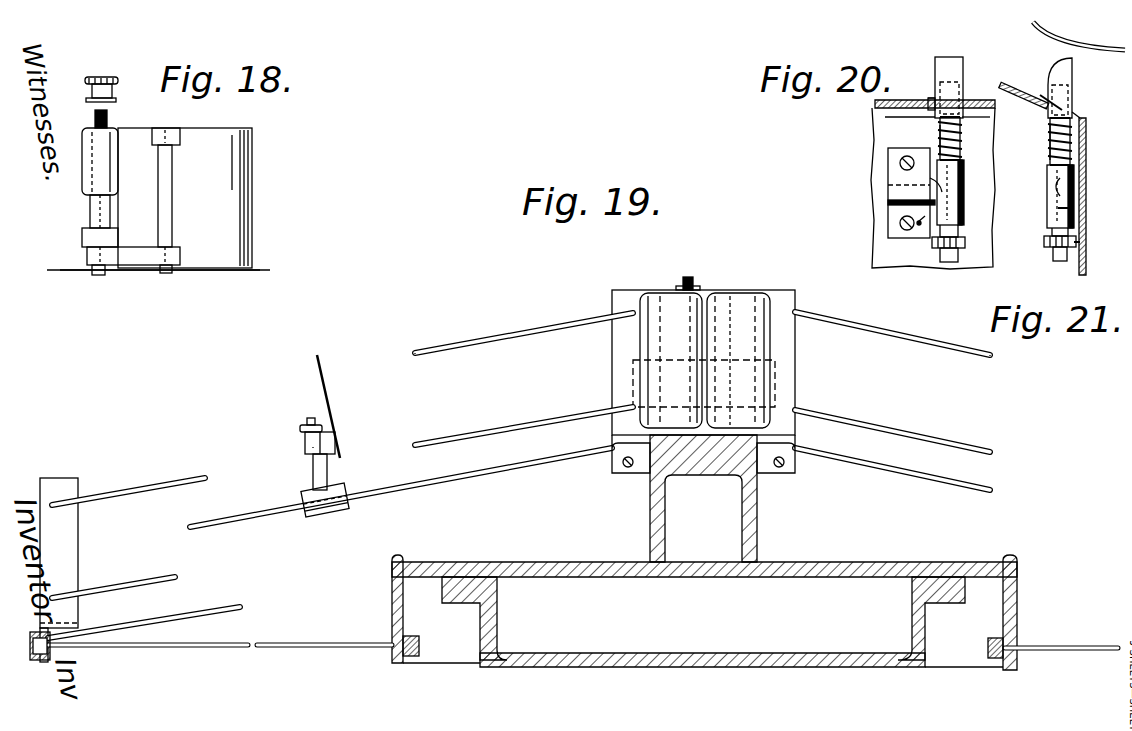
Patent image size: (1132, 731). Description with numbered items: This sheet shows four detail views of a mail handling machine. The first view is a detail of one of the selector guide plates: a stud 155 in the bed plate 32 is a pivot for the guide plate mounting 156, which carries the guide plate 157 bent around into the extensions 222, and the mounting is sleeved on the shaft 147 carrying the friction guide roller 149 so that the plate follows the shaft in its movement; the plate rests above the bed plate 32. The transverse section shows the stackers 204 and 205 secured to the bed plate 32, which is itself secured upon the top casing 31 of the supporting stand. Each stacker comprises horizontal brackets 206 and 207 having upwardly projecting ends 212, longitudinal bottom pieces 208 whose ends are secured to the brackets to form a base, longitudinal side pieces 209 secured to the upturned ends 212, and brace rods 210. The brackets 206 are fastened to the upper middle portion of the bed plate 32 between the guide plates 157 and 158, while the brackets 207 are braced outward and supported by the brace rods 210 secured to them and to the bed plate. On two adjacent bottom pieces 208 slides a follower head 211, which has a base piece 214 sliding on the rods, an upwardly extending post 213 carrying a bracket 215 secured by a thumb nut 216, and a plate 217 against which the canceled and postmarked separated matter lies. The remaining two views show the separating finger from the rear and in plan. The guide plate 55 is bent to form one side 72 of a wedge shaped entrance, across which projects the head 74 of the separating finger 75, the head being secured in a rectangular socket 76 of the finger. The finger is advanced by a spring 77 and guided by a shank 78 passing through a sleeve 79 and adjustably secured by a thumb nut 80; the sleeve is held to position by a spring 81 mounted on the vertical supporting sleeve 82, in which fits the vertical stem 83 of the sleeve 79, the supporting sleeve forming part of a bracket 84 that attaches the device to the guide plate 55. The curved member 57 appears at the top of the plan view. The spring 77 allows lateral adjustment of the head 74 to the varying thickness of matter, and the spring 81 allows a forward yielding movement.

In FIG. 18, the shaft 147 is at (108, 118).
In FIG. 19, the shaft 147 is at (688, 277).
In FIG. 18, the friction guide roller 149 is at (88, 181).
In FIG. 18, the extension 222 is at (92, 211).
In FIG. 18, the guide plate 157 is at (185, 198).
In FIG. 19, the guide plate 157 is at (640, 350).
In FIG. 19, the guide plate 158 is at (770, 350).
In FIG. 18, the guide plate mounting 156 is at (133, 255).
In FIG. 18, the stud 155 is at (165, 270).
In FIG. 18, the bed plate 32 is at (193, 272).
In FIG. 19, the bed plate 32 is at (757, 497).
In FIG. 19, the top casing 31 is at (704, 612).
In FIG. 19, the stacker 204 is at (937, 384).
In FIG. 19, the stacker 205 is at (450, 381).
In FIG. 19, the horizontal bracket 206 is at (650, 470).
In FIG. 19, the horizontal bracket 207 is at (48, 660).
In FIG. 19, the longitudinal bottom piece 208 is at (519, 543).
In FIG. 19, the longitudinal side piece 209 is at (521, 455).
In FIG. 19, the brace rod 210 is at (583, 636).
In FIG. 19, the follower head 211 is at (288, 443).
In FIG. 19, the upwardly projecting end 212 is at (633, 380).
In FIG. 19, the post 213 is at (313, 473).
In FIG. 19, the base piece 214 is at (345, 510).
In FIG. 19, the bracket 215 is at (305, 449).
In FIG. 19, the thumb nut 216 is at (310, 425).
In FIG. 19, the plate 217 is at (335, 420).
In FIG. 20, the guide plate 55 is at (993, 192).
In FIG. 21, the guide plate 55 is at (1086, 137).
In FIG. 21, the curved strip 57 is at (1079, 36).
In FIG. 21, the side of wedge shaped entrance 72 is at (1022, 100).
In FIG. 20, the head 74 is at (963, 65).
In FIG. 21, the head 74 is at (1072, 68).
In FIG. 20, the separating finger 75 is at (963, 95).
In FIG. 21, the separating finger 75 is at (1081, 99).
In FIG. 20, the socket 76 is at (928, 100).
In FIG. 21, the socket 76 is at (1050, 100).
In FIG. 20, the spring 77 is at (962, 140).
In FIG. 21, the spring 77 is at (1050, 150).
In FIG. 20, the shank 78 is at (940, 137).
In FIG. 21, the shank 78 is at (1050, 160).
In FIG. 20, the sleeve 79 is at (964, 190).
In FIG. 21, the sleeve 79 is at (1047, 216).
In FIG. 20, the thumb nut 80 is at (965, 244).
In FIG. 21, the thumb nut 80 is at (1044, 243).
In FIG. 20, the spring 81 is at (922, 240).
In FIG. 20, the vertical supporting sleeve 82 is at (888, 205).
In FIG. 21, the vertical supporting sleeve 82 is at (1074, 215).
In FIG. 20, the vertical stem 83 is at (888, 190).
In FIG. 21, the vertical stem 83 is at (1074, 185).
In FIG. 20, the bracket 84 is at (888, 160).
In FIG. 21, the bracket 84 is at (1080, 243).